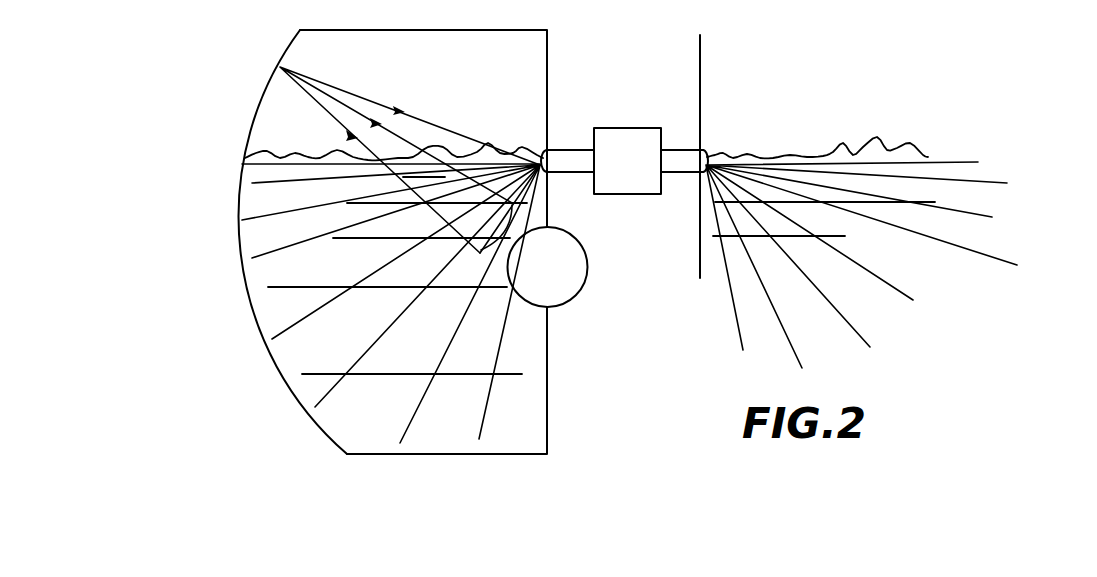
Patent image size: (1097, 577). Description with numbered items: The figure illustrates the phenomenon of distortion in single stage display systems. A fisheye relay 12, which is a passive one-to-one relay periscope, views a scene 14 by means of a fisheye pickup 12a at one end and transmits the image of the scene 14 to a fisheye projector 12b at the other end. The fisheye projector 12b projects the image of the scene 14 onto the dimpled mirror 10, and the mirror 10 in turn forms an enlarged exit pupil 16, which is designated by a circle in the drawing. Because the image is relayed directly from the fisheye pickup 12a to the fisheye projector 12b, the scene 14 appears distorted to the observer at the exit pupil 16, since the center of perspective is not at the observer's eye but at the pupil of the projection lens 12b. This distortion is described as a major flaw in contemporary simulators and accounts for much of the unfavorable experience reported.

The dimpled mirror 10 is at (258, 100).
The fisheye relay 12 is at (645, 128).
The fisheye pickup 12a is at (706, 152).
The fisheye projector 12b is at (543, 150).
The scene 14 is at (875, 132).
The exit pupil 16 is at (573, 290).